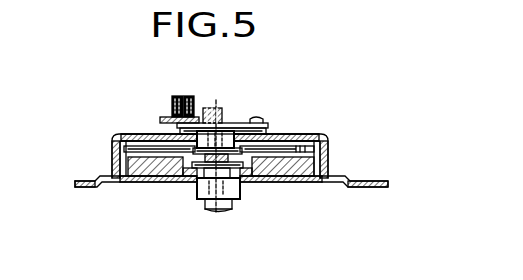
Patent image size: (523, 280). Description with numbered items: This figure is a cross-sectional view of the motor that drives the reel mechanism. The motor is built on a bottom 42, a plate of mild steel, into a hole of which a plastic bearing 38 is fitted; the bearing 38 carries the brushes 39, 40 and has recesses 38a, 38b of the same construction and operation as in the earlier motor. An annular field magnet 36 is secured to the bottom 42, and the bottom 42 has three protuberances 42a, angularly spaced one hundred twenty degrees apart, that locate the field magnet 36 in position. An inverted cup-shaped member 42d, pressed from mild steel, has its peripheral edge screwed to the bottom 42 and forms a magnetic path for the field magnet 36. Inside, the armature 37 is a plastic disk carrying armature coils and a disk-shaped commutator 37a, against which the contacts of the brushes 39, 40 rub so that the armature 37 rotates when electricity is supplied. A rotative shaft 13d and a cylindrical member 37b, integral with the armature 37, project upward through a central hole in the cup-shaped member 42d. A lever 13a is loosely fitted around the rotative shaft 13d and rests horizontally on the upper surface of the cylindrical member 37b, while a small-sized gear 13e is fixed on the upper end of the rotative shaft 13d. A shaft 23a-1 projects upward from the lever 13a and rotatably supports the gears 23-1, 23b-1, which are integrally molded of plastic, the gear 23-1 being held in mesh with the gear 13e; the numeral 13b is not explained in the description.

The lever 13a is at (245, 120).
The plate lower layer 13b is at (262, 133).
The rotative shaft 13d is at (221, 110).
The small-sized gear 13e is at (232, 113).
The gear 23-1 is at (162, 117).
The shaft 23a-1 is at (181, 95).
The gear 23b-1 is at (193, 96).
The annular field magnet 36 is at (292, 177).
The armature 37 is at (325, 153).
The disk-shaped commutator 37a is at (190, 146).
The cylindrical member 37b is at (258, 183).
The bearing 38 is at (243, 199).
The recess 38a is at (201, 209).
The recess 38b is at (236, 211).
The brush 39 is at (152, 182).
The brush 40 is at (200, 172).
The bottom 42 is at (373, 187).
The protuberance 42a is at (320, 184).
The inverted cup-shaped member 42d is at (112, 152).